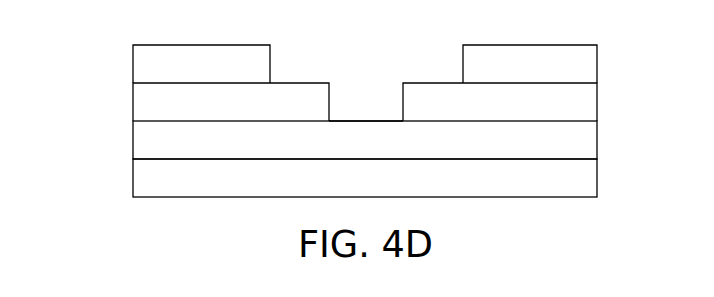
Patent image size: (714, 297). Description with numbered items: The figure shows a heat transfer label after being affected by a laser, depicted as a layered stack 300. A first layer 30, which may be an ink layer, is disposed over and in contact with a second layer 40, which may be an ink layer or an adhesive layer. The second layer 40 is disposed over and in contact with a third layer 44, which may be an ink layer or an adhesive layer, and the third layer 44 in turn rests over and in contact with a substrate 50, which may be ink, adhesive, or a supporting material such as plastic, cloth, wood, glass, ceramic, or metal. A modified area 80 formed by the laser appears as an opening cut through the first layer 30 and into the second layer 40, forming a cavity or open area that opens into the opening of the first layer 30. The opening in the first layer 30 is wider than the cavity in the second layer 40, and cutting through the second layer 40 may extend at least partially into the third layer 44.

The layer stack 300 is at (350, 118).
The first layer 30 is at (598, 67).
The second layer 40 is at (598, 107).
The third layer 44 is at (598, 142).
The substrate 50 is at (598, 180).
The modified area 80 is at (364, 108).